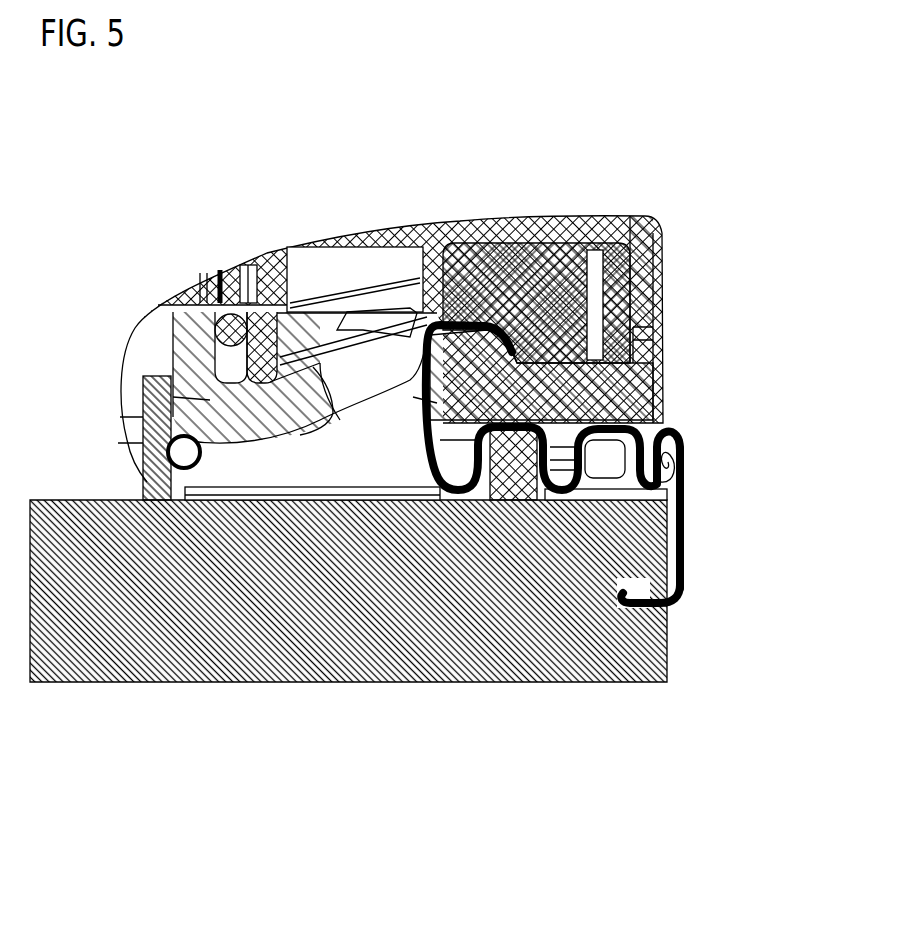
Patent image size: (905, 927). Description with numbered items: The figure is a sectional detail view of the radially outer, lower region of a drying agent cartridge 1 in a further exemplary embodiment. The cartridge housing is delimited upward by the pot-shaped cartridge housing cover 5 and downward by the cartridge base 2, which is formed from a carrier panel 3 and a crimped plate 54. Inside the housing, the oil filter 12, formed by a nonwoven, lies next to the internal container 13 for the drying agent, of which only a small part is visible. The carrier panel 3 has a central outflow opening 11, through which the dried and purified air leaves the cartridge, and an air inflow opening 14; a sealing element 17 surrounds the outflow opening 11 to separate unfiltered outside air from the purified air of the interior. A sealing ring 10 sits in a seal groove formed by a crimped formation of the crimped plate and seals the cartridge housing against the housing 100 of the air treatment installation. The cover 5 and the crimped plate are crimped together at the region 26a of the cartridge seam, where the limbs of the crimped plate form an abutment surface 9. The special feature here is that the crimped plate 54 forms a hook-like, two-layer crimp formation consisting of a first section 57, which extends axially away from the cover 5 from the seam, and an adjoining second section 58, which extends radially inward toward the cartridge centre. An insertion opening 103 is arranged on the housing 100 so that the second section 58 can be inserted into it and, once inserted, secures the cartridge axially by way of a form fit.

The drying agent cartridge 1 is at (370, 181).
The cartridge base 2 is at (688, 392).
The carrier panel 3 is at (145, 385).
The cartridge housing cover 5 is at (657, 280).
The abutment surface 9 is at (636, 588).
The sealing ring 10 is at (507, 470).
The central outflow opening 11 is at (152, 348).
The oil filter 12 is at (532, 223).
The internal container 13 is at (497, 223).
The air inflow opening 14 is at (370, 400).
The sealing element 17 is at (182, 453).
The region of the cartridge seam 26a is at (684, 457).
The crimped plate 54 is at (428, 440).
The first section 57 is at (690, 540).
The second section 58 is at (668, 608).
The housing of the air treatment installation 100 is at (323, 633).
The insertion opening 103 is at (627, 613).